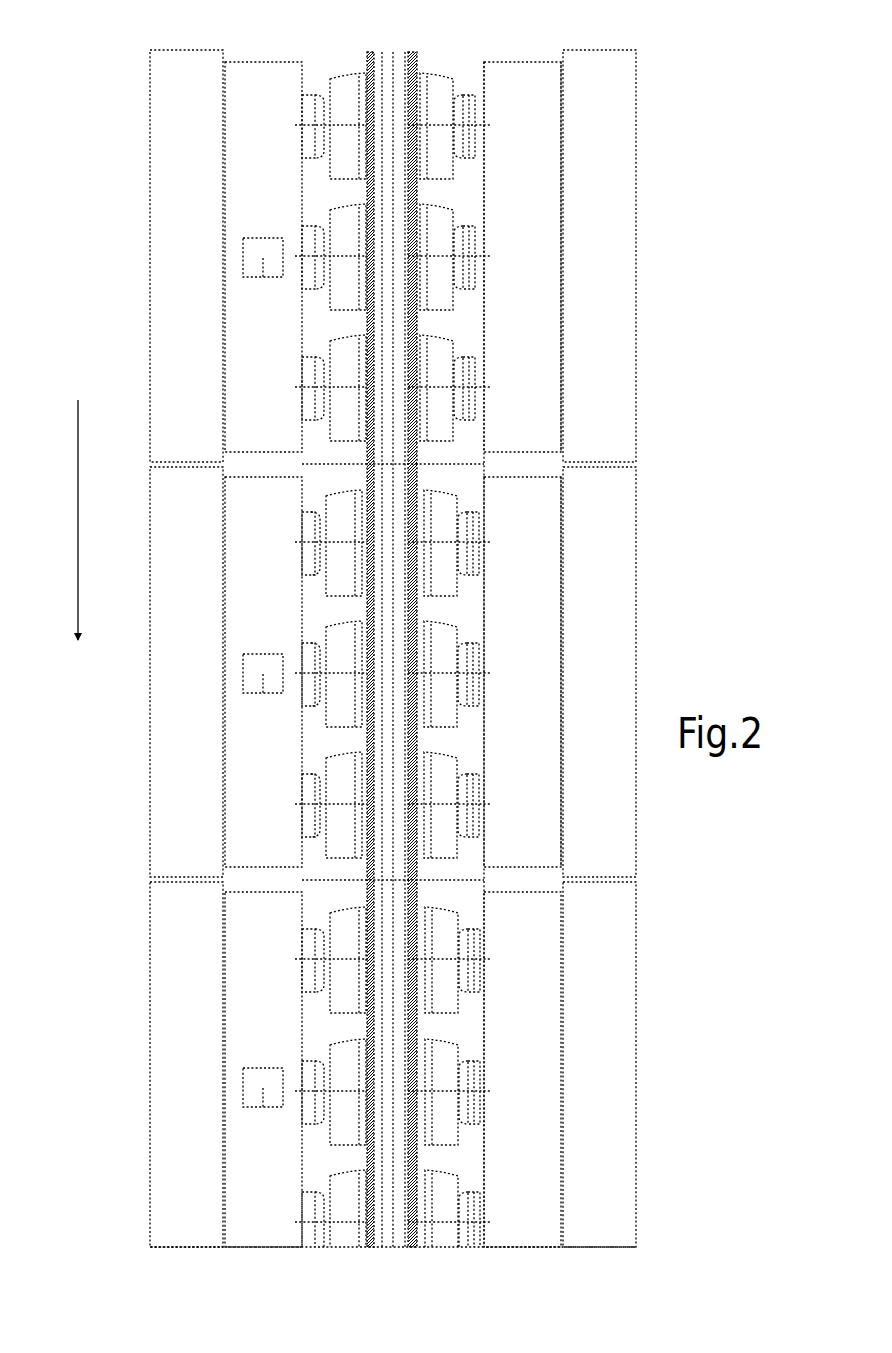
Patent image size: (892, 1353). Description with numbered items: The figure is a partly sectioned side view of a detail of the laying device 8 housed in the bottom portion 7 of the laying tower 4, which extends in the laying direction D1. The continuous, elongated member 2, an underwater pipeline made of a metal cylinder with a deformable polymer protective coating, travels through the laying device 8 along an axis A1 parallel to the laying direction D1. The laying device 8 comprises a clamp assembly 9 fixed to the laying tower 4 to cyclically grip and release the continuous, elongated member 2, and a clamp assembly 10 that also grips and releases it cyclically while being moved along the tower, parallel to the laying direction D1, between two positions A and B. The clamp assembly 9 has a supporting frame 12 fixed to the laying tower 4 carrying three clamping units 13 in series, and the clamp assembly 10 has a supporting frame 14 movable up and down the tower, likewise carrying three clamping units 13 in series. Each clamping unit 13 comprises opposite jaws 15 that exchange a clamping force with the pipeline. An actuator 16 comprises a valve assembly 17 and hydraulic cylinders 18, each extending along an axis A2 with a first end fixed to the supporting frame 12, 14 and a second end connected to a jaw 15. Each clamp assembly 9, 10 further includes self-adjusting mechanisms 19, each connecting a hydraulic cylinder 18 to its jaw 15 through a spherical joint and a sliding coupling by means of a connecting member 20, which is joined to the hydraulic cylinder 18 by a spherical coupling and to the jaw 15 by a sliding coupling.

The continuous, elongated member 2 is at (384, 58).
The axis A1 is at (393, 52).
The laying tower 4 is at (746, 480).
The bottom portion 7 is at (662, 636).
The laying device 8 is at (682, 949).
The clamp assembly 9 is at (285, 1253).
The clamp assembly 10 is at (510, 54).
The supporting frame 12 is at (563, 1141).
The clamping unit 13 is at (490, 114).
The supporting frame 14 is at (563, 306).
The jaw 15 is at (365, 63).
The actuator 16 is at (294, 222).
The valve assembly 17 is at (262, 279).
The hydraulic cylinder 18 is at (303, 104).
The self-adjusting mechanism 19 is at (333, 72).
The connecting member 20 is at (320, 92).
The position A is at (640, 233).
The position B is at (640, 689).
The axis A2 is at (300, 127).
The laying direction D1 is at (99, 520).